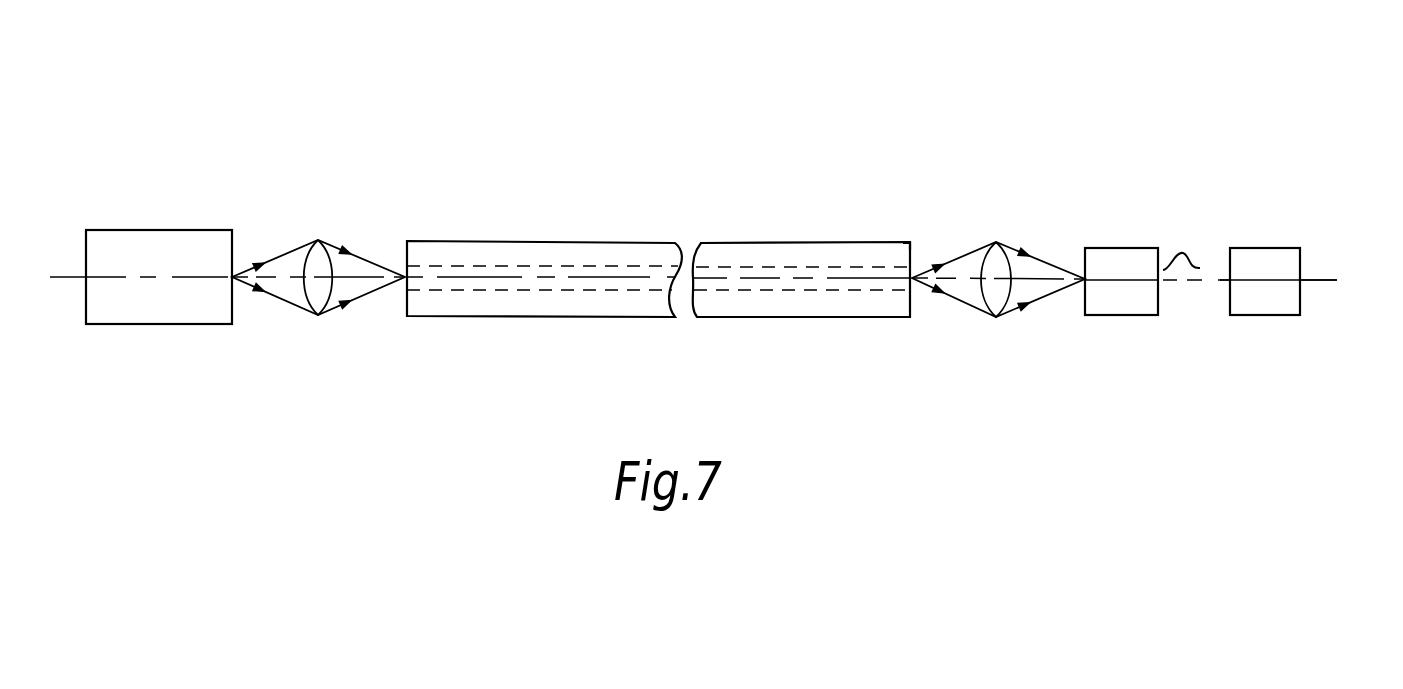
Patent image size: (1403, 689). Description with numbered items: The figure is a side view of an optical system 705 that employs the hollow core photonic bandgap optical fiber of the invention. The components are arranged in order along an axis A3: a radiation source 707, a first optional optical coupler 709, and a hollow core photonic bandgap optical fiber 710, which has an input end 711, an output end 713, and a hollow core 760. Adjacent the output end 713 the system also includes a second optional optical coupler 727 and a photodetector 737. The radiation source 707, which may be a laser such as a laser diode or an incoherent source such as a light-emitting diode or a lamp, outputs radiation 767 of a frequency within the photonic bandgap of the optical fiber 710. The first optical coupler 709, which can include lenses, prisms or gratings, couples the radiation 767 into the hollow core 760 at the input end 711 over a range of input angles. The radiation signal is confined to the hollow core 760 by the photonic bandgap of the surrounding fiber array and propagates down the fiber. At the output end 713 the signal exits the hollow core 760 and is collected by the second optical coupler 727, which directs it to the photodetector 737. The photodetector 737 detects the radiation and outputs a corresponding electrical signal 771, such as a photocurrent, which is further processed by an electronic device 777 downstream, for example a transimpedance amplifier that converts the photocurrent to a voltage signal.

The optical system 705 is at (1240, 76).
The radiation source 707 is at (155, 325).
The first optional optical coupler 709 is at (318, 294).
The radiation 767 is at (288, 249).
The input end 711 is at (407, 250).
The hollow core 760 is at (657, 276).
The hollow core photonic bandgap optical fiber 710 is at (832, 320).
The output end 713 is at (912, 250).
The second optional optical coupler 727 is at (1082, 325).
The photodetector 737 is at (1122, 248).
The electrical signal 771 is at (1183, 253).
The electronic device 777 is at (1267, 248).
The axis A3 is at (1323, 282).